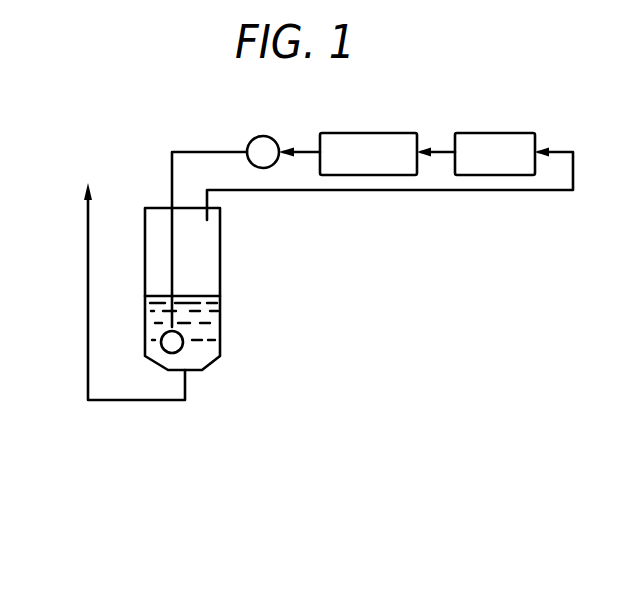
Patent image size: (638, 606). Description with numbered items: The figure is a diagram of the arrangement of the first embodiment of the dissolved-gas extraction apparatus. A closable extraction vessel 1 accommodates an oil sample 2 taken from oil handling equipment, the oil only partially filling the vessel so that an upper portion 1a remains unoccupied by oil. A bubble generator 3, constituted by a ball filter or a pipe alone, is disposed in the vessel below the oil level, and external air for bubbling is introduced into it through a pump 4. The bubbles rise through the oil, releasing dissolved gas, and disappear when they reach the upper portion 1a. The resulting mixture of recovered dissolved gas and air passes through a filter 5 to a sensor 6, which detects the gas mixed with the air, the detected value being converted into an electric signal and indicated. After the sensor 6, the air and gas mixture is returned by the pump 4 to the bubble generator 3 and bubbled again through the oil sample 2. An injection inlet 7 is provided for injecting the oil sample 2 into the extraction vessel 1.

The extraction vessel 1 is at (208, 289).
The upper portion of the extraction vessel 1a is at (215, 239).
The oil sample 2 is at (208, 318).
The bubble generator 3 is at (202, 367).
The pump 4 is at (232, 209).
The filter 5 is at (476, 133).
The sensor 6 is at (352, 133).
The injection inlet 7 is at (116, 275).